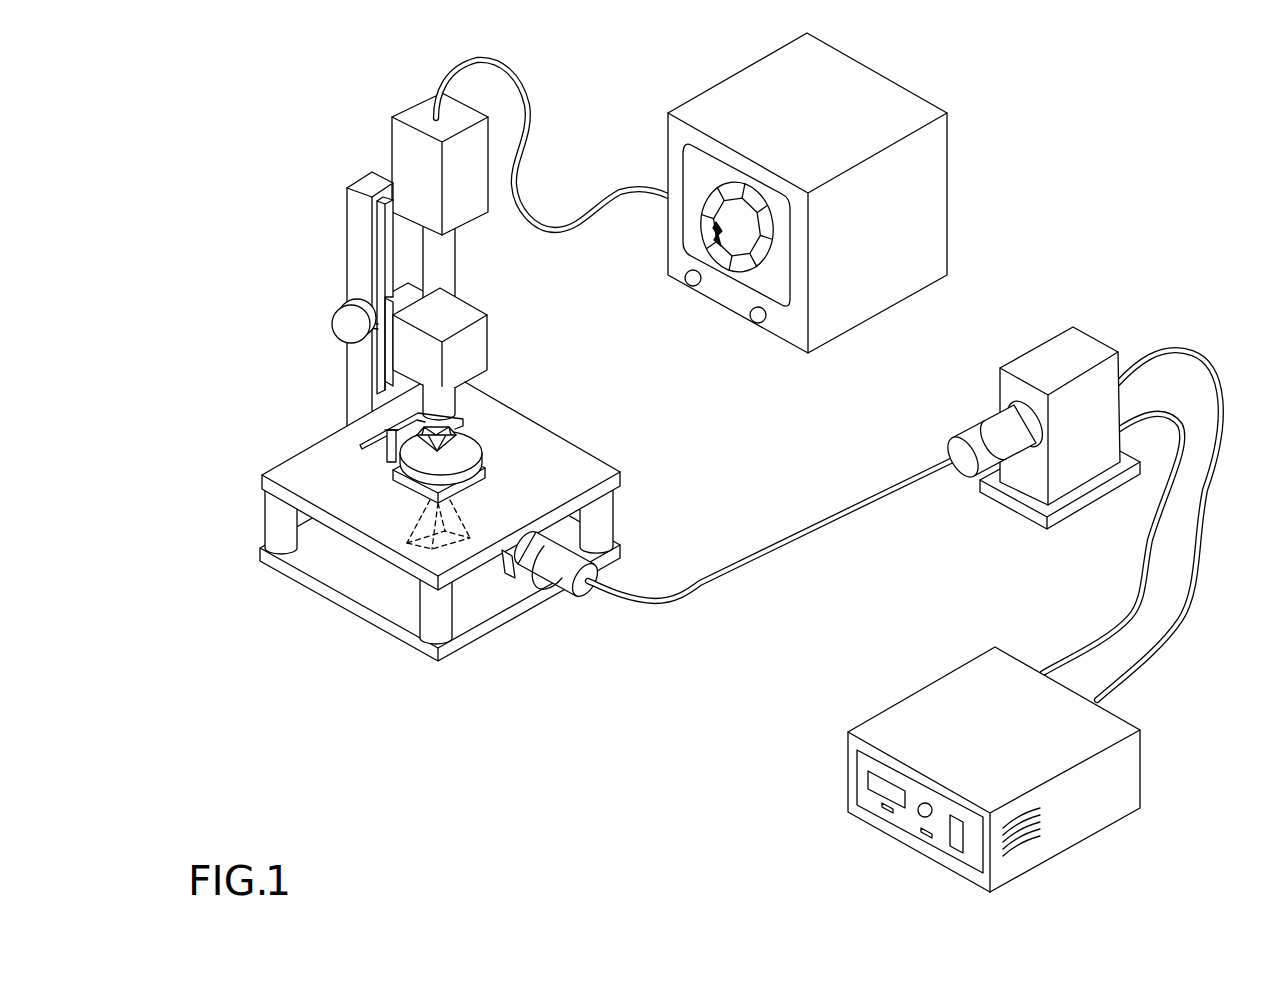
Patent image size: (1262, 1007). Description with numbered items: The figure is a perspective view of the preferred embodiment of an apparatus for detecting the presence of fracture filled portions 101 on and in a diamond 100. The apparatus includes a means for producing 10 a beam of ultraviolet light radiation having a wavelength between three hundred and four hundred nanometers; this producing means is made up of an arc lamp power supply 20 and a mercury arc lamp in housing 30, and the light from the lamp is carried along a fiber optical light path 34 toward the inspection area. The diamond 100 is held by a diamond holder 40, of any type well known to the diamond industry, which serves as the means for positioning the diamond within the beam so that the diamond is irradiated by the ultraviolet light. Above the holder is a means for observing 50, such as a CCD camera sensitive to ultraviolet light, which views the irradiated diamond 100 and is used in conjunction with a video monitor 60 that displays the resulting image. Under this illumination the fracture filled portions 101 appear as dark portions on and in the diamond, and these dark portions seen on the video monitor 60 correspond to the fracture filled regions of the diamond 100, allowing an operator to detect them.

The means for producing a beam of ultra violet light radiation 10 is at (957, 897).
The arc lamp power supply 20 is at (1135, 720).
The mercury arc lamp in housing 30 is at (1075, 327).
The fiber optical light path 34 is at (798, 538).
The diamond holder 40 is at (366, 446).
The means for observing 50 is at (392, 128).
The video monitor 60 is at (948, 177).
The diamond 100 is at (467, 445).
The fracture filled portions 101 is at (717, 237).